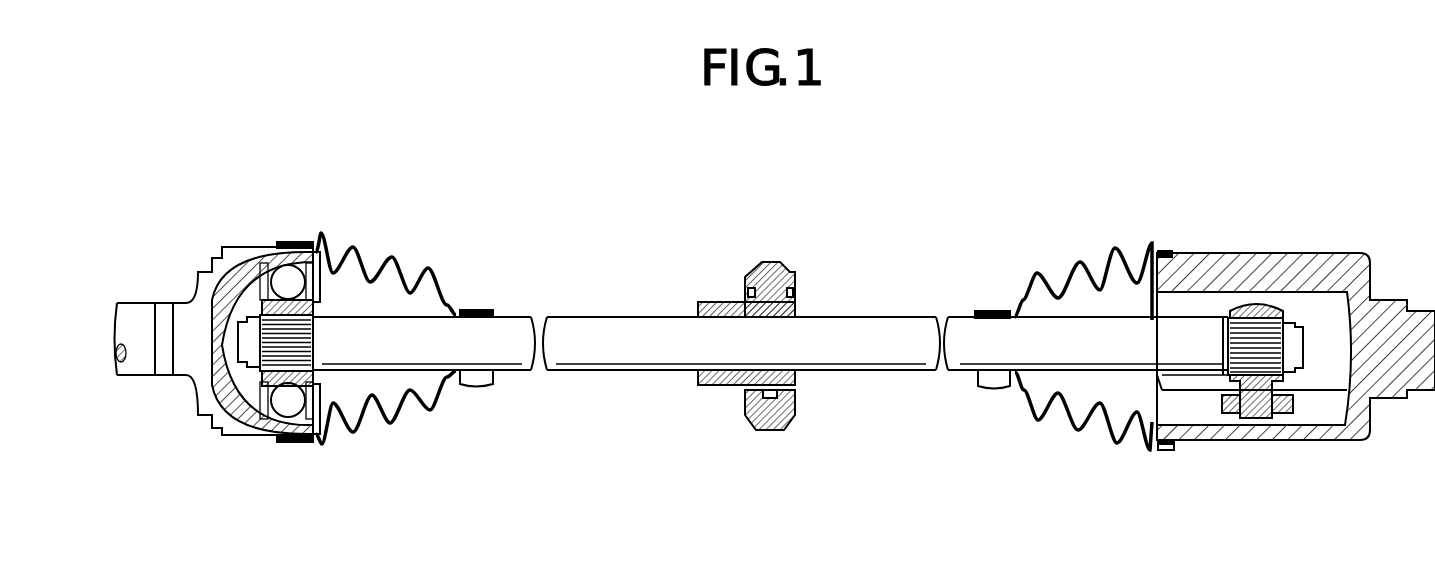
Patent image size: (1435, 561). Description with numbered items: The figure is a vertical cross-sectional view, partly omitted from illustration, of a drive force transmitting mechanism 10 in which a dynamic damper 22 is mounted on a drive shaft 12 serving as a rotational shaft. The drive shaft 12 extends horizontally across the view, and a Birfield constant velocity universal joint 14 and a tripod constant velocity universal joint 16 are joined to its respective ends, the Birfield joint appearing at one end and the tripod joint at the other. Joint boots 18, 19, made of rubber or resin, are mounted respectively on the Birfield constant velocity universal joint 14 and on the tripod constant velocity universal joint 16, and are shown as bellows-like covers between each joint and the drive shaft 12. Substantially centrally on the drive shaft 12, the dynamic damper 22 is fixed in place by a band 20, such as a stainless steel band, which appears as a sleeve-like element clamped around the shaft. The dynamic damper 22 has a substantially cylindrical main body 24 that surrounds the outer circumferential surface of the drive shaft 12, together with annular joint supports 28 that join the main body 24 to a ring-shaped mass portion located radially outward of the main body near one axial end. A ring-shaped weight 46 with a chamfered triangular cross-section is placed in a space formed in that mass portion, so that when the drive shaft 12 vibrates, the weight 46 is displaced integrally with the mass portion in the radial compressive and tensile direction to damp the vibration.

The drive force transmitting mechanism 10 is at (568, 173).
The drive shaft 12 is at (890, 360).
The Birfield constant velocity universal joint 14 is at (250, 262).
The tripod constant velocity universal joint 16 is at (1256, 277).
The joint boot 18 is at (392, 260).
The joint boot 19 is at (1077, 262).
The band 20 is at (720, 302).
The dynamic damper 22 is at (785, 261).
The main body 24 is at (798, 317).
The annular joint supports 28 is at (792, 273).
The ring-shaped weight 46 is at (778, 262).